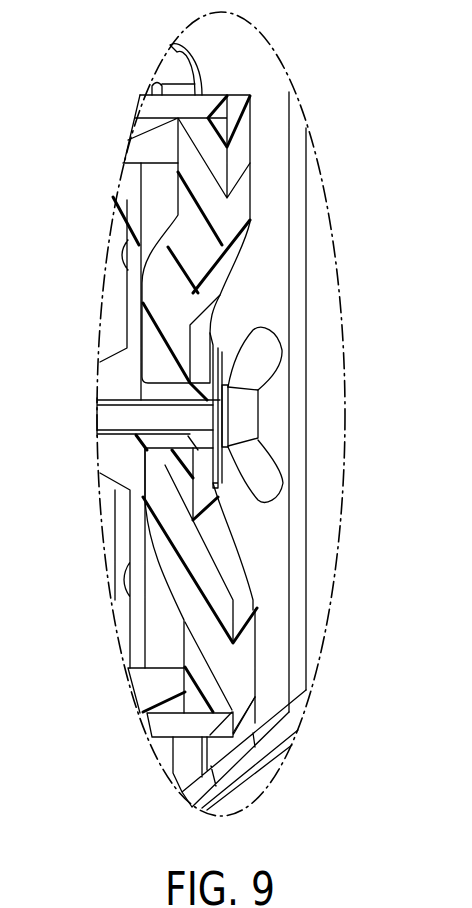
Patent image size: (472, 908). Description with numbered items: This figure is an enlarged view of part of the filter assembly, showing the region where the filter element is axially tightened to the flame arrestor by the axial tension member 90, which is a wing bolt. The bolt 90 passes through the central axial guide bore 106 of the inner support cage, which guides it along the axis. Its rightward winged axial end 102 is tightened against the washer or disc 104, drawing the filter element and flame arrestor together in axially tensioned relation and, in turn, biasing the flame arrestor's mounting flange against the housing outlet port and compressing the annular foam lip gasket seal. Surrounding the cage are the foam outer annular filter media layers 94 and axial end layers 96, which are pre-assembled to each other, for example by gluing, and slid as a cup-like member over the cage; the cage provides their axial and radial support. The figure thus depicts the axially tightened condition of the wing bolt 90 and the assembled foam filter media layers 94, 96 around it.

The axial tension member 90 is at (110, 415).
The outer annular filter media layers 94 is at (156, 723).
The axial end layers 96 is at (242, 145).
The winged axial end 102 is at (265, 487).
The washer or disc 104 is at (216, 488).
The central axial guide bore 106 is at (167, 442).